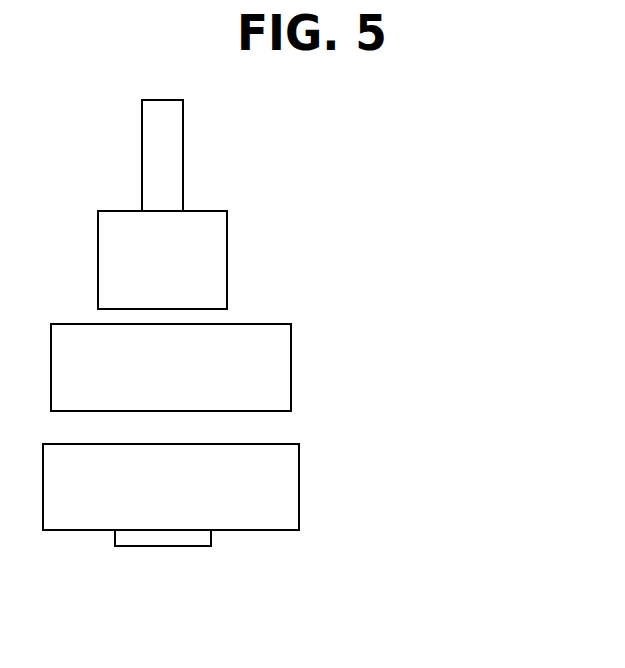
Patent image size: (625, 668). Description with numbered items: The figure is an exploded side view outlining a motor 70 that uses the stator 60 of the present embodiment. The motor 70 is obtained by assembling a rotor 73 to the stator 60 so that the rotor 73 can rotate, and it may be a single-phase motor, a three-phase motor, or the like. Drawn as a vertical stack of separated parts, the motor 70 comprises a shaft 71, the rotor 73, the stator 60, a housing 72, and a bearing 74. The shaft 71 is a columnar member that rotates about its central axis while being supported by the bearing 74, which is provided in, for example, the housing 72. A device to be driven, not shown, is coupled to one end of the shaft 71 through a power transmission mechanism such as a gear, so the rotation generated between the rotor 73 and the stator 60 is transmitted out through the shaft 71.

The motor 70 is at (435, 228).
The shaft 71 is at (183, 146).
The housing 72 is at (299, 456).
The rotor 73 is at (227, 258).
The bearing 74 is at (166, 546).
The stator 60 is at (291, 372).